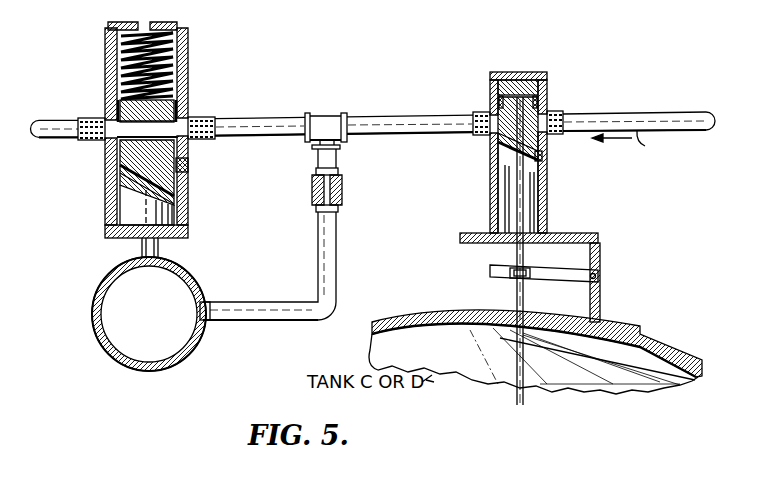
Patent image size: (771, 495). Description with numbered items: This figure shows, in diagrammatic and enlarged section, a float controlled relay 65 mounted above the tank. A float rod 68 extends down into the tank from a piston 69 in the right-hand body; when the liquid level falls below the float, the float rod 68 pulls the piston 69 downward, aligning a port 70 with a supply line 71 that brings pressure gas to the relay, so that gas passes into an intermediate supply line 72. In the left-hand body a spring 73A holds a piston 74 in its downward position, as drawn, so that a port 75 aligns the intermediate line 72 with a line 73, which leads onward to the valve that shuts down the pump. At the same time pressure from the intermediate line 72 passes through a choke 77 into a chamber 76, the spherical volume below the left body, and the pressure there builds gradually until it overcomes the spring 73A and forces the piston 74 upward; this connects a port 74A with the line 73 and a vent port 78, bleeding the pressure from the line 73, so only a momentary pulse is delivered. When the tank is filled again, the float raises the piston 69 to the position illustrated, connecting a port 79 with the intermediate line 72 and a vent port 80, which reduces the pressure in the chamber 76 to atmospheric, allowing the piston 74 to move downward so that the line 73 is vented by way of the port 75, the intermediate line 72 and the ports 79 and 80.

The float controlled relay 65 is at (194, 90).
The spring 73A is at (119, 80).
The line 73 is at (66, 128).
The port 75 is at (186, 122).
The port 74A is at (121, 172).
The piston 74 is at (126, 201).
The vent port 78 is at (186, 170).
The chamber 76 is at (96, 308).
The intermediate supply line 72 is at (352, 124).
The choke 77 is at (343, 188).
The supply line 71 is at (600, 118).
The port 70 is at (498, 100).
The port 79 is at (512, 141).
The piston 69 is at (505, 171).
The vent port 80 is at (541, 157).
The float rod 68 is at (518, 296).